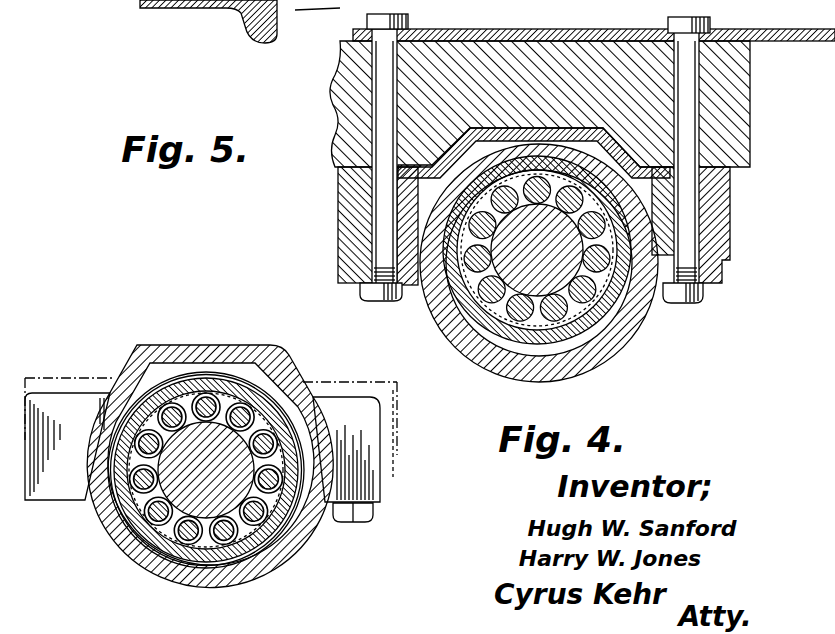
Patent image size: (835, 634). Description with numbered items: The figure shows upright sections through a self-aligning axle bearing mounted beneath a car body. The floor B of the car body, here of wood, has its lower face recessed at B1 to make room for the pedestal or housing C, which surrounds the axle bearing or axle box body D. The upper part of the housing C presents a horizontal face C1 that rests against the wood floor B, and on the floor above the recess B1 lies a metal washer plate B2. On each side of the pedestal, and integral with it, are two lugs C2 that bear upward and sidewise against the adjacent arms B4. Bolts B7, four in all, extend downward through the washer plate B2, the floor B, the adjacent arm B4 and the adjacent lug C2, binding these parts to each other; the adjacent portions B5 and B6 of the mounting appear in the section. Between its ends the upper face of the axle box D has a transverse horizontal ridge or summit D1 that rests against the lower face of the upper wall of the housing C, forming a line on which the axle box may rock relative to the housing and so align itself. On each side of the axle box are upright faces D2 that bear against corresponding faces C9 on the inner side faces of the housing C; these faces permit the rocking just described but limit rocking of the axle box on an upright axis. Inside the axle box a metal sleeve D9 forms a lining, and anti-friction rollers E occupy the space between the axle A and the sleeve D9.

In FIG. 5, the axle A is at (605, 343).
In FIG. 4, the axle A is at (135, 535).
In FIG. 5, the floor of the car body B is at (331, 79).
In FIG. 5, the recess B1 is at (497, 127).
In FIG. 5, the metal washer plate B2 is at (560, 23).
In FIG. 5, the arms B4 is at (338, 175).
In FIG. 5, the block shoulder B5 is at (331, 138).
In FIG. 5, the lower clamping piece B6 is at (345, 203).
In FIG. 4, the lower clamping piece B6 is at (397, 440).
In FIG. 5, the bolts B7 is at (395, 62).
In FIG. 5, the pedestal or housing C is at (538, 378).
In FIG. 4, the pedestal or housing C is at (143, 583).
In FIG. 5, the horizontal face C1 is at (600, 127).
In FIG. 4, the horizontal face C1 is at (227, 352).
In FIG. 5, the lugs C2 is at (370, 262).
In FIG. 4, the lugs C2 is at (400, 483).
In FIG. 4, the faces on inner side faces of the housing C9 is at (97, 447).
In FIG. 5, the axle bearing or axle box body D is at (578, 350).
In FIG. 4, the axle bearing or axle box body D is at (200, 592).
In FIG. 4, the transverse horizontal ridge or summit D1 is at (172, 345).
In FIG. 4, the upright faces D2 is at (320, 403).
In FIG. 5, the metal sleeve D9 is at (512, 348).
In FIG. 4, the metal sleeve D9 is at (206, 470).
In FIG. 5, the anti-friction rollers E is at (475, 328).
In FIG. 4, the anti-friction rollers E is at (252, 402).